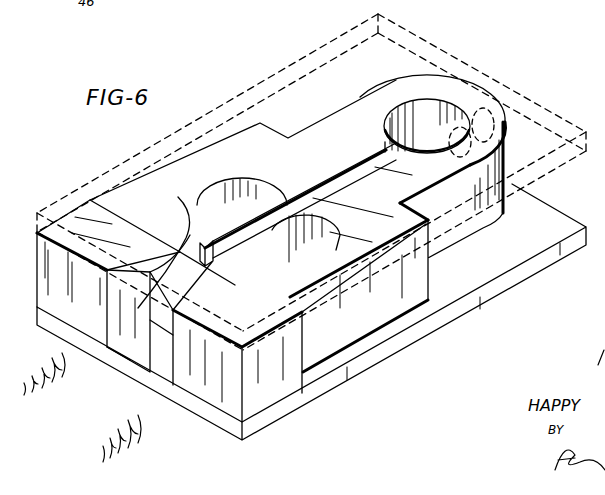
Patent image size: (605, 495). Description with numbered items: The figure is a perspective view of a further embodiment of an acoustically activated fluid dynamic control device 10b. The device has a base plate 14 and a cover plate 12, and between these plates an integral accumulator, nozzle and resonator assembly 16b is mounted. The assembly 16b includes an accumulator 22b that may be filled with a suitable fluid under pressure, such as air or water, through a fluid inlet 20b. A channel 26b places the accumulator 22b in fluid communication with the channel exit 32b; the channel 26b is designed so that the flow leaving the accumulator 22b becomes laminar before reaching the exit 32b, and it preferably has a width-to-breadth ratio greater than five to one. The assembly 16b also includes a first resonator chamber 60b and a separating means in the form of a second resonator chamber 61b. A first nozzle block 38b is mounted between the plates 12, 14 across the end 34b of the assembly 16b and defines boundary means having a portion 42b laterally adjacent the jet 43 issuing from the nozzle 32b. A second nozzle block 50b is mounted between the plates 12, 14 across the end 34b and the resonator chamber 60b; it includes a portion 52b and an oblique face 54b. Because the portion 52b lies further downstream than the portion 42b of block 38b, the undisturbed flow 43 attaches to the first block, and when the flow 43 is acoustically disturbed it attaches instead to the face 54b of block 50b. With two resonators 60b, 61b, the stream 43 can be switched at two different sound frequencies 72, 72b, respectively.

The acoustically activated fluid dynamic control device 10b is at (362, 387).
The cover plate 12 is at (441, 52).
The base plate 14 is at (470, 293).
The integral accumulator, nozzle and resonator assembly 16b is at (311, 176).
The fluid inlet 20b is at (514, 113).
The accumulator 22b is at (421, 128).
The channel 26b is at (350, 163).
The channel exit 32b is at (175, 318).
The end of member 34b is at (323, 274).
The first nozzle block 38b is at (304, 330).
The portion of first nozzle block 42b is at (168, 310).
The jet 43 is at (176, 334).
The second nozzle block 50b is at (124, 248).
The portion of second nozzle block 52b is at (164, 243).
The oblique face 54b is at (97, 357).
The first resonator chamber 60b is at (242, 197).
The second resonator chamber 61b is at (278, 259).
The sound frequency 72 is at (50, 362).
The sound frequency 72b is at (141, 430).